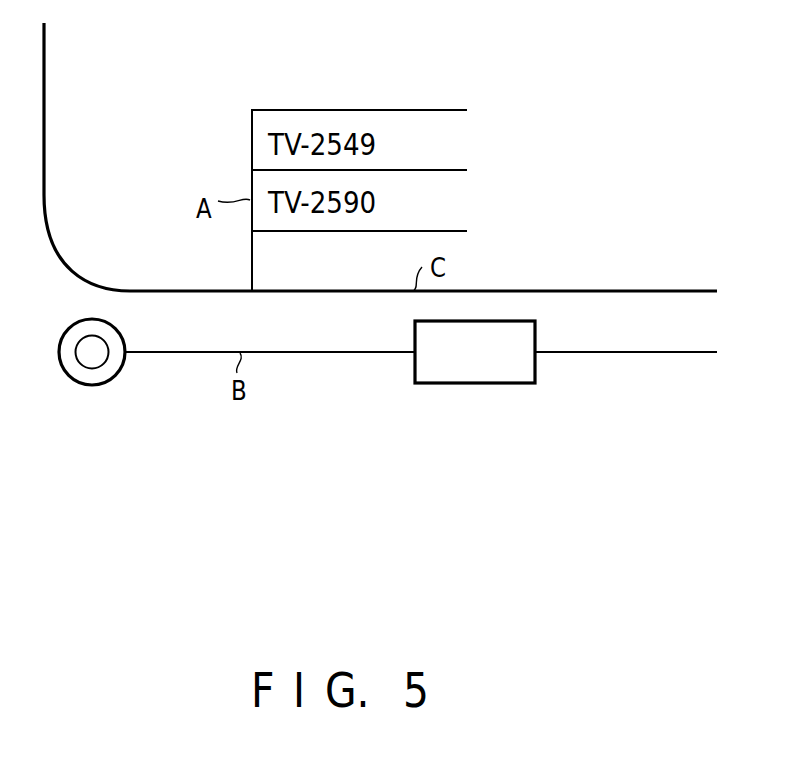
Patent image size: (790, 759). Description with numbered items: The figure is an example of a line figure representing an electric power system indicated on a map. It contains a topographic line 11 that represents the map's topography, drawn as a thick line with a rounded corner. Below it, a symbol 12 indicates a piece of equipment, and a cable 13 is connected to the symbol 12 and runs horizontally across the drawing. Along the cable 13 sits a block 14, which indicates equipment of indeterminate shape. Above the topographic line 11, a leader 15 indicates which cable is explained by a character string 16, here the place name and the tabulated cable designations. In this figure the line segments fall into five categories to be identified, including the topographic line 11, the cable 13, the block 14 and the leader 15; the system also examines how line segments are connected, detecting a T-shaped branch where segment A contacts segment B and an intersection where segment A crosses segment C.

The topographic line 11 is at (585, 291).
The symbol 12 is at (85, 383).
The cable 13 is at (345, 353).
The block 14 is at (467, 384).
The leader 15 is at (253, 265).
The character string 16 is at (350, 75).